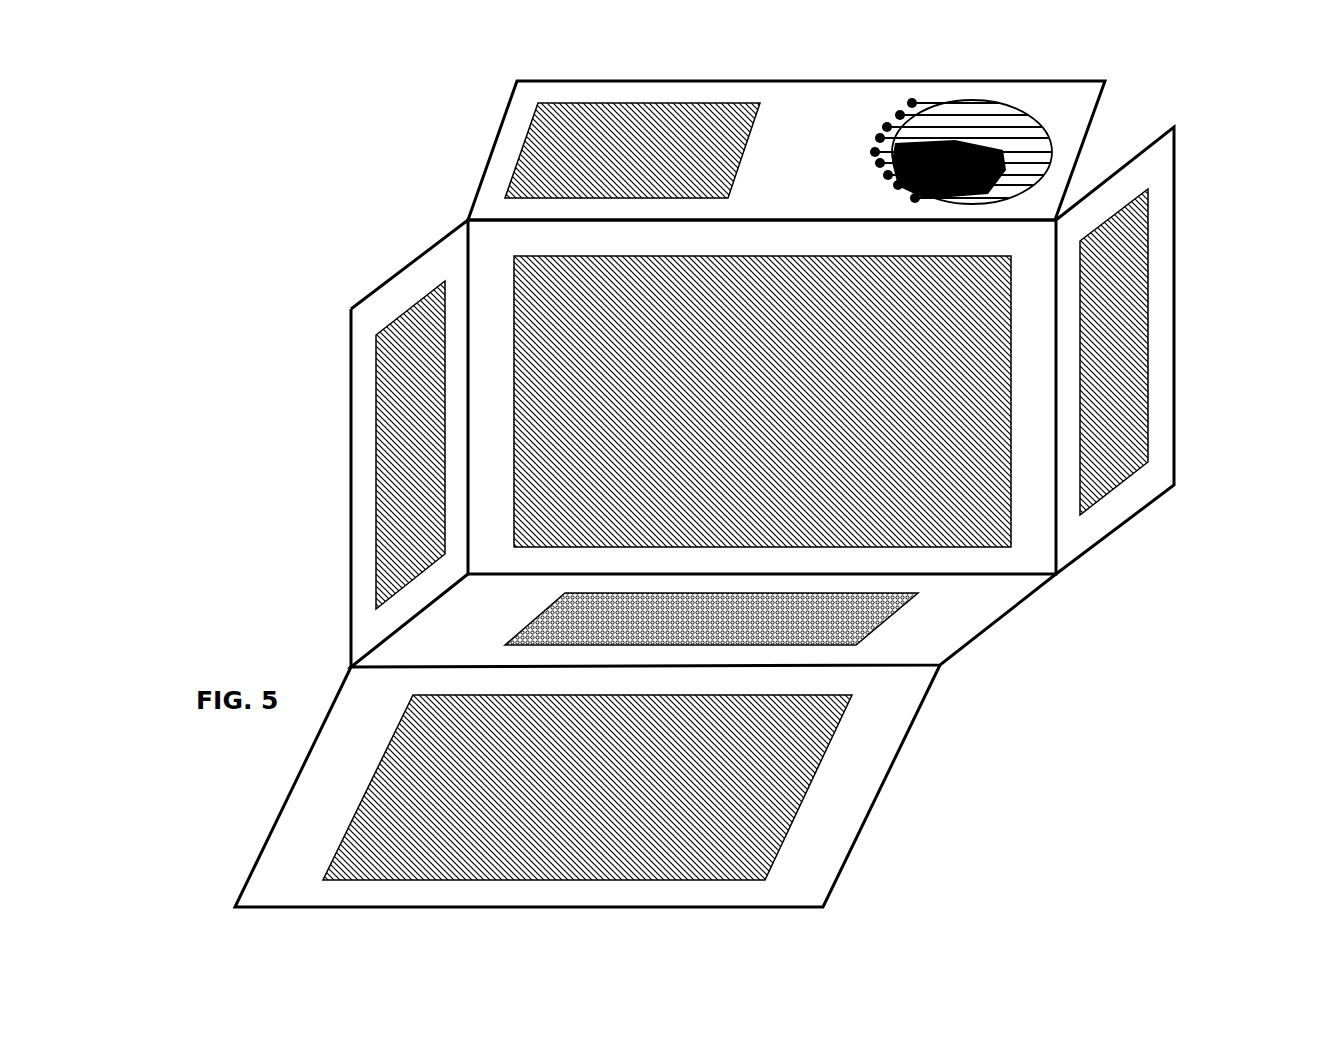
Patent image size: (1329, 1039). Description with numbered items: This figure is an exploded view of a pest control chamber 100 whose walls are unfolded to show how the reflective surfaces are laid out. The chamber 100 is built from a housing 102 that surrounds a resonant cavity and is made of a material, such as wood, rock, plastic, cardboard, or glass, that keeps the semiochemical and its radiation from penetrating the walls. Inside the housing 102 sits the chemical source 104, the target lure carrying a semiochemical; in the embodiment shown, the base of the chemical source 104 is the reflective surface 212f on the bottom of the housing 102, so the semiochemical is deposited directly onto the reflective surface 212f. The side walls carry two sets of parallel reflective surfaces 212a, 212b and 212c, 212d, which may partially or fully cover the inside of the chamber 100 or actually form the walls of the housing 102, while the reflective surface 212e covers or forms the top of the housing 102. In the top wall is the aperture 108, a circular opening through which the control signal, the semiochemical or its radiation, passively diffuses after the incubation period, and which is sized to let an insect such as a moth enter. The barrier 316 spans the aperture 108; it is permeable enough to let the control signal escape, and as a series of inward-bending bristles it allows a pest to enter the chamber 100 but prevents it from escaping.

The pest control chamber 100 is at (467, 167).
The housing 102 is at (322, 792).
The chemical source 104 is at (857, 619).
The aperture 108 is at (1041, 121).
The barrier 316 is at (930, 164).
The reflective surface 212a is at (391, 424).
The reflective surface 212b is at (1138, 241).
The reflective surface 212c is at (552, 290).
The reflective surface 212d is at (807, 744).
The reflective surface 212e is at (719, 160).
The reflective surface 212f is at (861, 643).